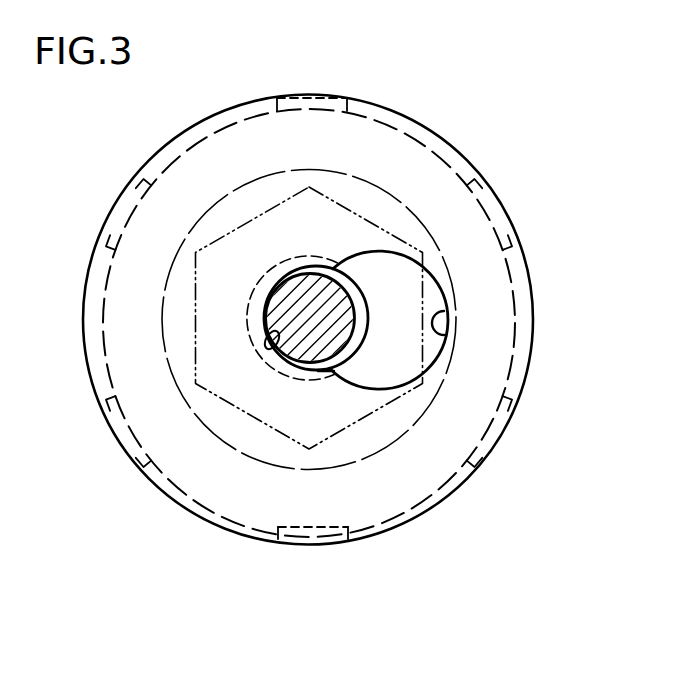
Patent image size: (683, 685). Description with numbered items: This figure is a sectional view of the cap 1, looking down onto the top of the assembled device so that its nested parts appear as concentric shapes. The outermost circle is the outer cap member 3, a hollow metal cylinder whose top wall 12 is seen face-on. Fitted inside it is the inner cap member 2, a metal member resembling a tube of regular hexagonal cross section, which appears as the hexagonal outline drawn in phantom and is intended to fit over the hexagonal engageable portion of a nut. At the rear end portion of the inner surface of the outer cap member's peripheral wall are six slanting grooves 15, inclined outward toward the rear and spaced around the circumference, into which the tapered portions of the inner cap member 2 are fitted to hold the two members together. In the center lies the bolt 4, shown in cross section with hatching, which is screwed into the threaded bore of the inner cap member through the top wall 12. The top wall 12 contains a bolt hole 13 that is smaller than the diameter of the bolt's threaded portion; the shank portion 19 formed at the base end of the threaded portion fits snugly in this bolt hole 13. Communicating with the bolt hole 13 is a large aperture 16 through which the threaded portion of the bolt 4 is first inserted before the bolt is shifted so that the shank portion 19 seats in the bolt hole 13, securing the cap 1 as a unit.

The cap 1 is at (543, 282).
The inner cap member 2 is at (413, 200).
The outer cap member 3 is at (435, 138).
The bolt 4 is at (422, 252).
The top wall 12 is at (363, 138).
The bolt hole 13 is at (278, 338).
The slanting grooves 15 is at (312, 95).
The large aperture 16 is at (440, 333).
The shank portion 19 is at (317, 350).